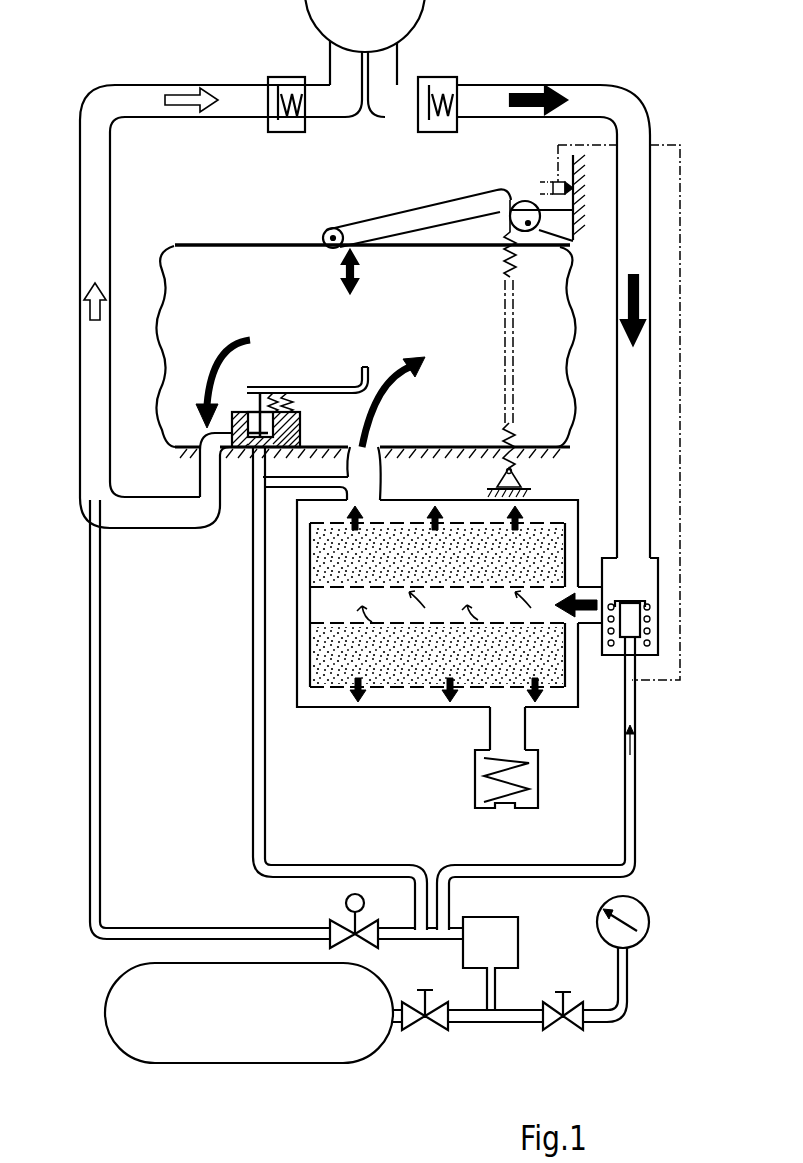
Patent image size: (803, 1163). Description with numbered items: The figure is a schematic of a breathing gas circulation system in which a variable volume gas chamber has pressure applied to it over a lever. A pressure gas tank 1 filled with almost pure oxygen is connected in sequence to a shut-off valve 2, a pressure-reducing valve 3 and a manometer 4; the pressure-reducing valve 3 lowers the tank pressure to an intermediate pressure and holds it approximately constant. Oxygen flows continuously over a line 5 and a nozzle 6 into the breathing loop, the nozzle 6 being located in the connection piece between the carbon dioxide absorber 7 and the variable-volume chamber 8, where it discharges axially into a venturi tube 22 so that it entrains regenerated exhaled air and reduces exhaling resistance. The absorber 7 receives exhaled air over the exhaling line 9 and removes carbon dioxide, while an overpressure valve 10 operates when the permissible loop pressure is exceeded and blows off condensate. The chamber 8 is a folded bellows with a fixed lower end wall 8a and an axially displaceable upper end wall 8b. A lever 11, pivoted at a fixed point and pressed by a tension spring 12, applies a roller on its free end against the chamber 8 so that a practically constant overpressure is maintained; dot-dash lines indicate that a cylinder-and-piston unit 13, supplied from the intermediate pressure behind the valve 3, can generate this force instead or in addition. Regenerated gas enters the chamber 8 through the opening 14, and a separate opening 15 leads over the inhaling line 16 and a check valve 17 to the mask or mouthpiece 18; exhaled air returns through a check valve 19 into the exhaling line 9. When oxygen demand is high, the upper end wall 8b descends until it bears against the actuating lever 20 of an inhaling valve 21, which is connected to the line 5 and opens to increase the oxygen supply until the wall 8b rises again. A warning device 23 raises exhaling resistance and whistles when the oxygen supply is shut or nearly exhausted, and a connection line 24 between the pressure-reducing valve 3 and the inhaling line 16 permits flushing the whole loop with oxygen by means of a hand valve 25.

The pressure gas tank 1 is at (180, 1047).
The shut-off valve 2 is at (436, 1030).
The pressure-reducing valve 3 is at (520, 939).
The manometer 4 is at (650, 922).
The line 5 is at (253, 583).
The nozzle 6 is at (380, 485).
The carbon dioxide absorber 7 is at (558, 548).
The variable-volume chamber 8 is at (270, 272).
The lower end wall 8a is at (481, 449).
The upper end wall 8b is at (455, 253).
The exhaling line 9 is at (618, 414).
The overpressure valve 10 is at (541, 782).
The lever 11 is at (403, 198).
The tension spring 12 is at (506, 331).
The cylinder-and-piston unit 13 is at (557, 183).
The opening 14 is at (352, 452).
The opening 15 is at (198, 440).
The inhaling line 16 is at (82, 147).
The check valve 17 is at (285, 77).
The mask or mouthpiece 18 is at (375, 39).
The check valve 19 is at (440, 77).
The actuating lever 20 is at (336, 387).
The inhaling valve 21 is at (247, 387).
The venturi tube 22 is at (374, 447).
The warning device 23 is at (635, 628).
The connection line 24 is at (90, 583).
The hand valve 25 is at (340, 922).